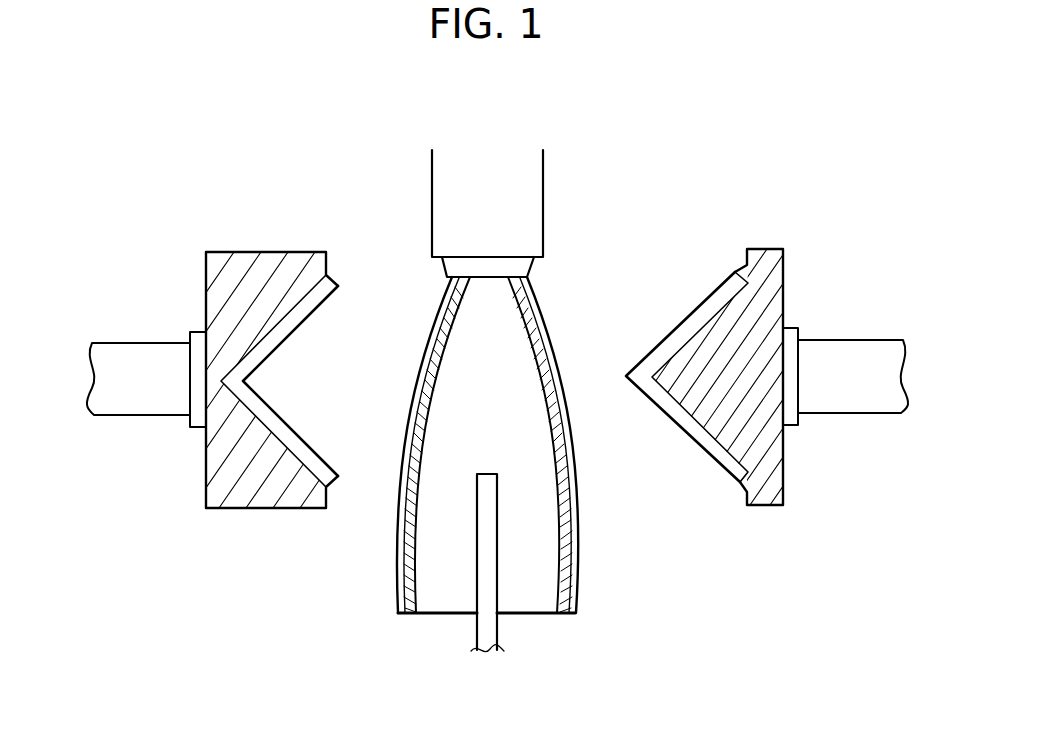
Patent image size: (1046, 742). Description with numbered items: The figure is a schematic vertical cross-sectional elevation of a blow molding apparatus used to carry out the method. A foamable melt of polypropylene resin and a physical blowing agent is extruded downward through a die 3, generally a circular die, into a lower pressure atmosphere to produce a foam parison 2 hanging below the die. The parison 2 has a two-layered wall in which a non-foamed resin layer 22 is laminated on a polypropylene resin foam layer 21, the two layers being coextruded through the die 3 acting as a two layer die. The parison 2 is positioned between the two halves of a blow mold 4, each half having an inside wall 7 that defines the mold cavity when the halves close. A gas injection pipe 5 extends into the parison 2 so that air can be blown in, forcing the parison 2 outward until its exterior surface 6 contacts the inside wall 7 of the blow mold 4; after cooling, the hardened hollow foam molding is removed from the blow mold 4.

The foam parison 2 is at (511, 495).
The die 3 is at (523, 268).
The blow mold 4 is at (265, 278).
The gas injection pipe 5 is at (474, 628).
The exterior surface 6 is at (467, 495).
The inside wall 7 is at (307, 322).
The polypropylene resin foam layer 21 is at (563, 615).
The non-foamed resin layer 22 is at (571, 615).